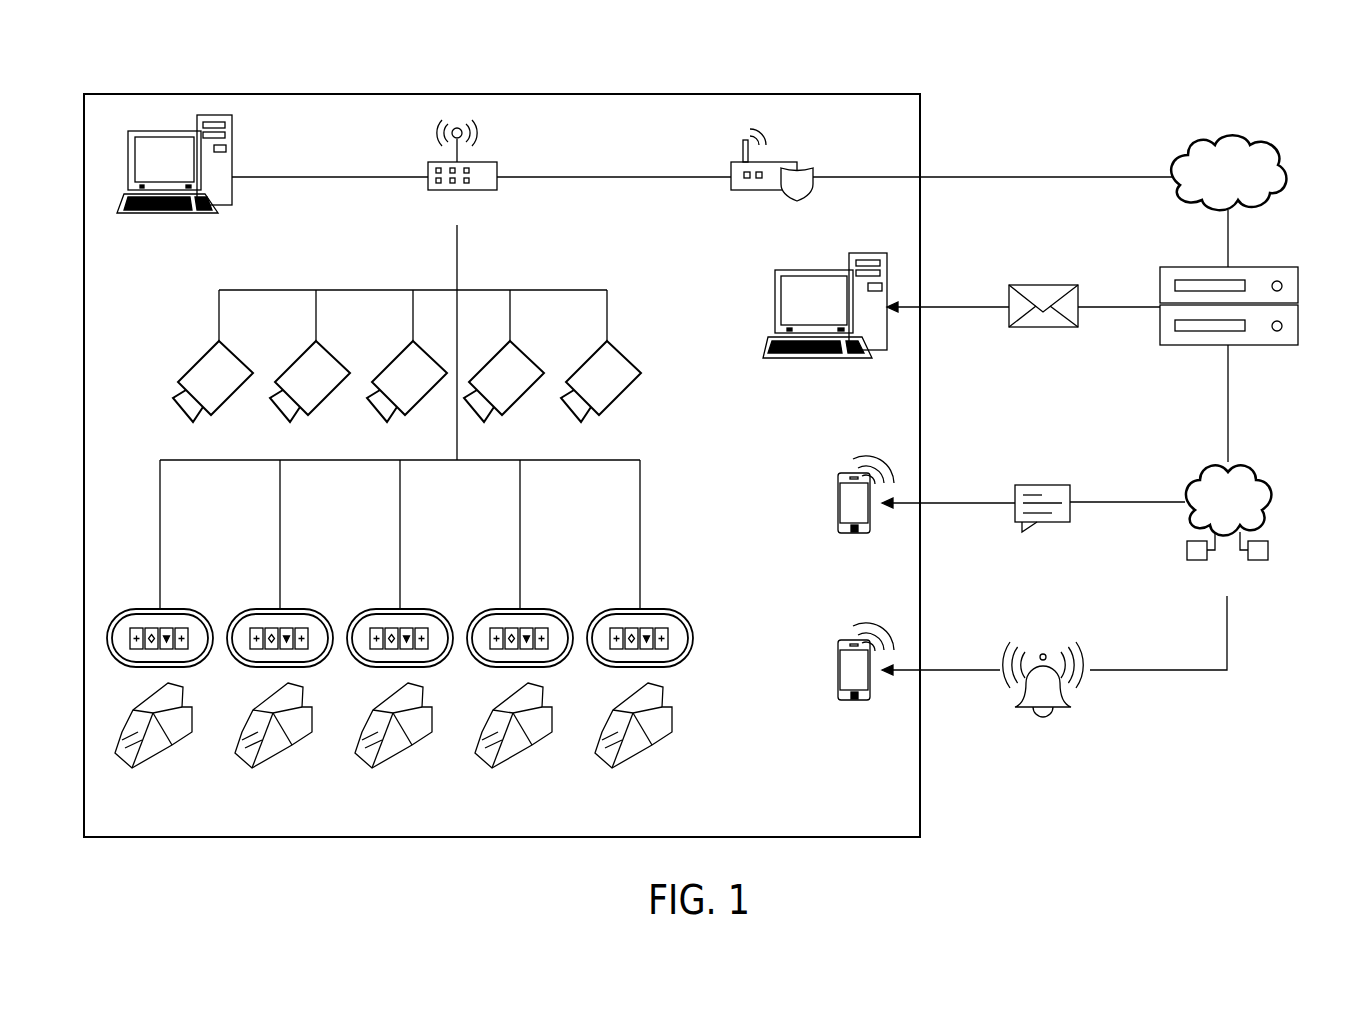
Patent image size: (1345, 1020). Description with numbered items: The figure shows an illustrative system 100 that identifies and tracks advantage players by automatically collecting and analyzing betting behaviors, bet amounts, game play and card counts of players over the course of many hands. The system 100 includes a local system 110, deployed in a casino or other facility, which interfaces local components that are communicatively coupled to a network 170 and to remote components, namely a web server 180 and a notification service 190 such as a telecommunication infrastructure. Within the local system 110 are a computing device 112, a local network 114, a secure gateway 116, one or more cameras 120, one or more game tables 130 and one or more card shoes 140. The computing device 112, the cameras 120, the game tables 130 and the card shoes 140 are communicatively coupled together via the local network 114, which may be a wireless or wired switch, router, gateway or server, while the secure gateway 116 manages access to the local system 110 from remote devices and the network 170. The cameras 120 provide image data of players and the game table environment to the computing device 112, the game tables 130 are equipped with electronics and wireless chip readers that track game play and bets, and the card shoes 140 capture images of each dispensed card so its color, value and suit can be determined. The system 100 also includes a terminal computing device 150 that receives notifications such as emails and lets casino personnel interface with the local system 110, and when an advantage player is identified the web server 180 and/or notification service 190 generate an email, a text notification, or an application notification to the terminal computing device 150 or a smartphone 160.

The system 100 is at (701, 420).
The local system 110 is at (138, 94).
The computing device 112 is at (233, 142).
The local network 114 is at (487, 162).
The secure gateway 116 is at (792, 161).
The cameras 120 is at (399, 373).
The game tables 130 is at (402, 563).
The card shoes 140 is at (384, 757).
The terminal computing device 150 is at (840, 362).
The smartphone 160 is at (848, 535).
The network 170 is at (1242, 137).
The web server 180 is at (1273, 267).
The notification service 190 is at (1264, 478).